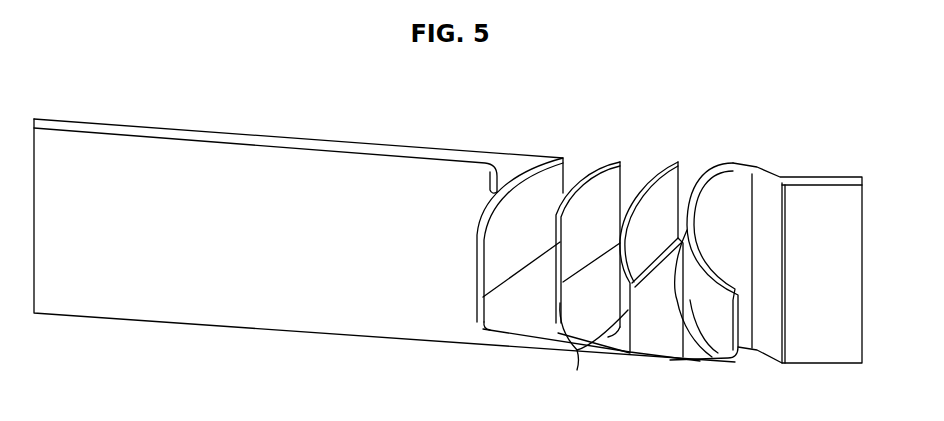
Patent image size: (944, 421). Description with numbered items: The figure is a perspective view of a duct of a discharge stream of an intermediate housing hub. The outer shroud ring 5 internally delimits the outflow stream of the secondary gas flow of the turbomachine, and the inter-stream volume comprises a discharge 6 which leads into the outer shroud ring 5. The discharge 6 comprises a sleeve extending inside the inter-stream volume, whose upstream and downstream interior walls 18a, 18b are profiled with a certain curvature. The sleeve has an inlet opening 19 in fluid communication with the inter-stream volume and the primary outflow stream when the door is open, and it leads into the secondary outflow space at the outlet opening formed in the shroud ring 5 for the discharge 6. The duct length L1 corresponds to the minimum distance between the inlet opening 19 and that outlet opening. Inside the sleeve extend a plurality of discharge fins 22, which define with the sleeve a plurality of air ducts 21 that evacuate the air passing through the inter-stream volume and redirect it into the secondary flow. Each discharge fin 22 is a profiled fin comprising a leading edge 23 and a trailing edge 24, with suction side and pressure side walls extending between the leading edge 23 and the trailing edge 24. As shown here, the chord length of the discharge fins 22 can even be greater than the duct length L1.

The outer shroud ring 5 is at (357, 143).
The discharge 6 is at (705, 156).
The upstream interior wall 18a is at (560, 186).
The downstream interior wall 18b is at (700, 322).
The inlet opening 19 is at (477, 322).
The air duct 21 is at (510, 305).
The discharge fin 22 is at (574, 235).
The leading edge 23 is at (590, 348).
The trailing edge 24 is at (622, 170).
The duct length L1 is at (556, 165).